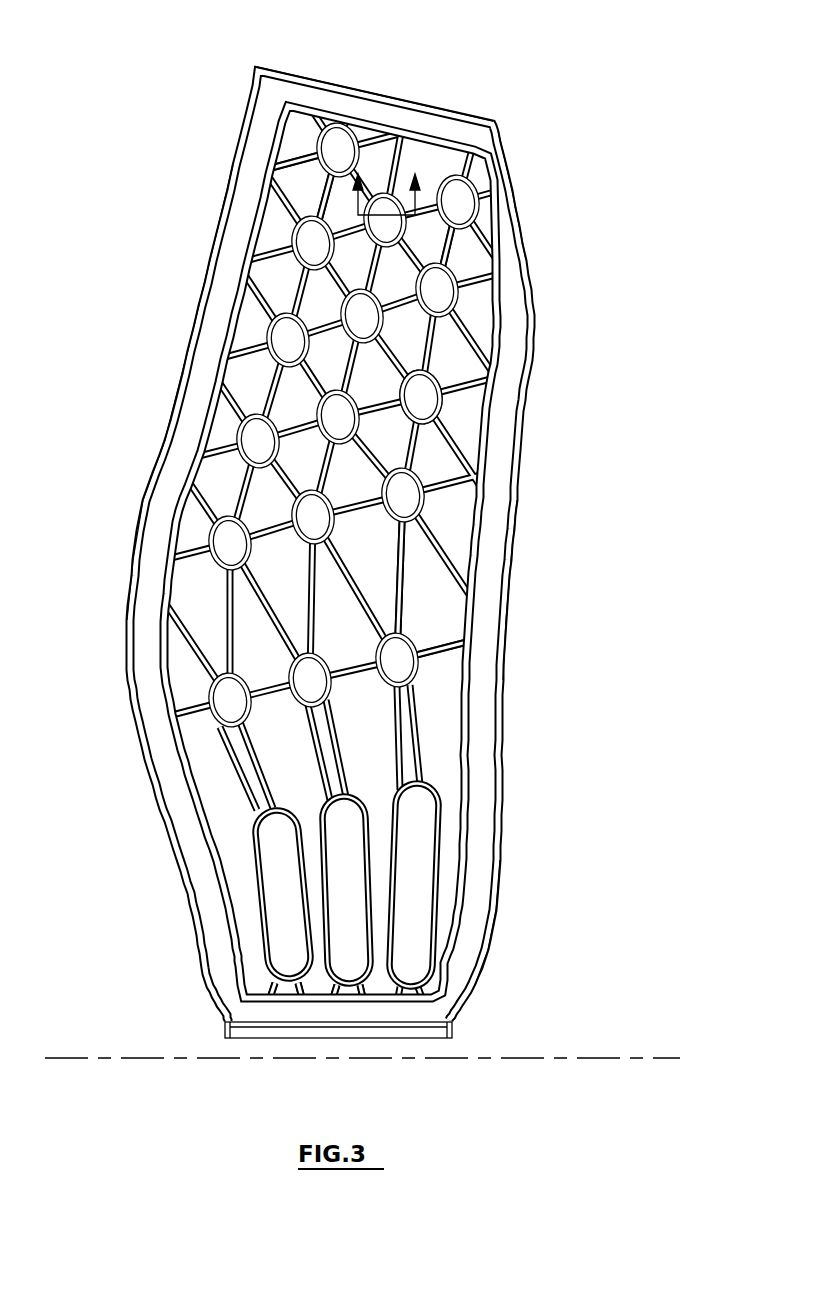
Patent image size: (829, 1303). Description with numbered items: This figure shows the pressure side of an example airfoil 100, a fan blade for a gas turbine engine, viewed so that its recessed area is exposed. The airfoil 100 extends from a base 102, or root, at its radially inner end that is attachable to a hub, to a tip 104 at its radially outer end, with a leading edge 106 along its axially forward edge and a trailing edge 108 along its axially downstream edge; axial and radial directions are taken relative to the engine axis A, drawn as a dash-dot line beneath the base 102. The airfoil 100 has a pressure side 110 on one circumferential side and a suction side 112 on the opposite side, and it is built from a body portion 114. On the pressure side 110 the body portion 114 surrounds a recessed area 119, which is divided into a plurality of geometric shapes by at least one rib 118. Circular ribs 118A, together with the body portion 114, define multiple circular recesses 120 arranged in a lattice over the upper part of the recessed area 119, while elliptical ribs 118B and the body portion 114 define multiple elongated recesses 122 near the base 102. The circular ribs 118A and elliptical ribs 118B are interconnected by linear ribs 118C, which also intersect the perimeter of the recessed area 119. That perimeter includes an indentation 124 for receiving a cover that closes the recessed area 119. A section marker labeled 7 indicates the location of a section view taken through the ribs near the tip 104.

The airfoil 100 is at (178, 104).
The base 102 is at (387, 1032).
The tip 104 is at (397, 95).
The leading edge 106 is at (163, 436).
The trailing edge 108 is at (511, 600).
The pressure side 110 is at (230, 302).
The suction side 112 is at (530, 160).
The body portion 114 is at (488, 930).
The rib 118 is at (462, 443).
The circular rib 118A is at (452, 304).
The elliptical rib 118B is at (333, 857).
The linear rib 118C is at (323, 195).
The recessed area 119 is at (466, 253).
The circular recess 120 is at (440, 387).
The elongated recess 122 is at (336, 917).
The indentation 124 is at (488, 150).
The section line 7 is at (385, 194).
The engine axis A is at (122, 1060).